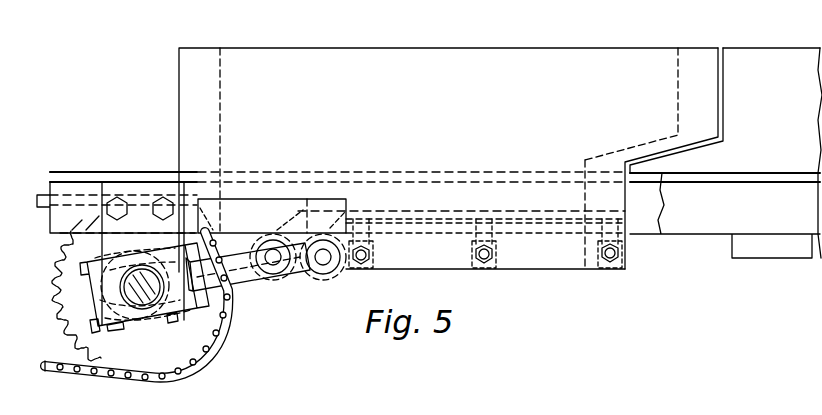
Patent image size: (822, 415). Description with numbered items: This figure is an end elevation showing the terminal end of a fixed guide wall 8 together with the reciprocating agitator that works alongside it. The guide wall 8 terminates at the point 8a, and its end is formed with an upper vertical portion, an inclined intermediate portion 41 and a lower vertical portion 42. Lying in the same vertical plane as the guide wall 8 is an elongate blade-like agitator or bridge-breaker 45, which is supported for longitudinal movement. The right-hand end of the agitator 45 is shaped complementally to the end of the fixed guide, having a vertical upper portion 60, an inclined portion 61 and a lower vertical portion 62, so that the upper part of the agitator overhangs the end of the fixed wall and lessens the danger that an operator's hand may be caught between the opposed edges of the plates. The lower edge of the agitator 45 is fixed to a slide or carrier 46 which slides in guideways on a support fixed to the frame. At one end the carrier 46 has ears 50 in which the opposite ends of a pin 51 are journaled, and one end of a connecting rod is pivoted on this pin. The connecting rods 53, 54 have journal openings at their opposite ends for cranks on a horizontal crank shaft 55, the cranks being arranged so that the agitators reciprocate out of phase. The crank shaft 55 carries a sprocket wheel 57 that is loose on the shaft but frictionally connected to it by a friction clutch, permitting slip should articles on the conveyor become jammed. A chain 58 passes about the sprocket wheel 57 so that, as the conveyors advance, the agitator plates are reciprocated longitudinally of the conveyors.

The guide wall 8 is at (792, 153).
The terminating point of guide wall 8a is at (724, 60).
The inclined intermediate portion 41 is at (697, 145).
The lower vertical portion 42 is at (627, 203).
The agitator or bridge-breaker 45 is at (455, 58).
The slide or carrier 46 is at (437, 262).
The ears 50 is at (341, 267).
The pin 51 is at (324, 263).
The connecting rod 53 is at (242, 247).
The connecting rod 54 is at (248, 281).
The crank shaft 55 is at (141, 305).
The sprocket wheel 57 is at (196, 330).
The chain 58 is at (63, 376).
The vertical upper portion 60 is at (720, 73).
The inclined portion 61 is at (662, 150).
The lower vertical portion 62 is at (625, 192).